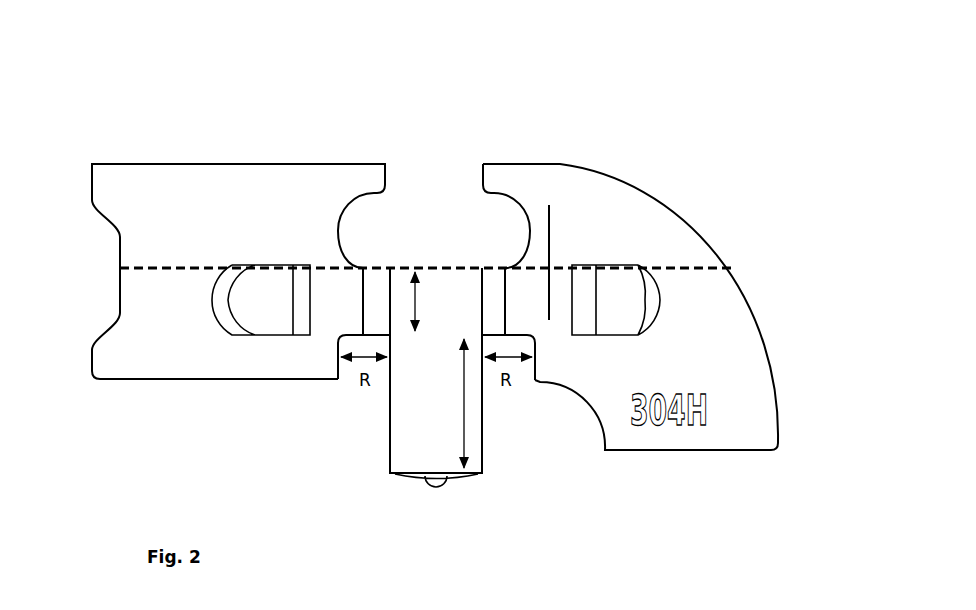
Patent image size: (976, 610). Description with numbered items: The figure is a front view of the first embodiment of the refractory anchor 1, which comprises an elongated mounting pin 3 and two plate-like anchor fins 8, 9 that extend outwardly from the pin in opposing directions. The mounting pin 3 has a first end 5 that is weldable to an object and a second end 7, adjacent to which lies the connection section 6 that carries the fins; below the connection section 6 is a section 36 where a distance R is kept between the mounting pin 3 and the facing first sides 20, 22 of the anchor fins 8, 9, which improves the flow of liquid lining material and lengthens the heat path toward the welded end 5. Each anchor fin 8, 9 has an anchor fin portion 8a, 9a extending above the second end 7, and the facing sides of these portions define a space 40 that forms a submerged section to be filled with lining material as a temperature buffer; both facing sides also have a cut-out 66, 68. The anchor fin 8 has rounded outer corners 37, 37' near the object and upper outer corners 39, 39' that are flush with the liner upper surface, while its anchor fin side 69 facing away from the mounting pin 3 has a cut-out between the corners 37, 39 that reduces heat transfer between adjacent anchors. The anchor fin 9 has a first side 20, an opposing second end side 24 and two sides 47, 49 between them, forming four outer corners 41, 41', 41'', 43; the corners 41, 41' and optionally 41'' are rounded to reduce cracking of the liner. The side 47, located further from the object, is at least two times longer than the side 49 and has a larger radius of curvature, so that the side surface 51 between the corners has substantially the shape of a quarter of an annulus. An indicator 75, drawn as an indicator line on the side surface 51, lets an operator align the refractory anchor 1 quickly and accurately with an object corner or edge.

The refractory anchor 1 is at (258, 126).
The elongated mounting pin 3 is at (415, 415).
The first end of the elongated mounting pin 5 is at (420, 482).
The connection section 6 is at (425, 301).
The second end of the elongated mounting pin 7 is at (435, 268).
The anchor fin 8 is at (192, 290).
The anchor fin portion 8a is at (156, 190).
The anchor fin 9 is at (740, 420).
The anchor fin portion 9a is at (573, 213).
The first side of anchor fin 9 20 is at (507, 298).
The first side of anchor fin 8 22 is at (363, 303).
The second end side 24 is at (703, 452).
The section below the connection section 36 is at (451, 403).
The outer corner 37 is at (59, 403).
The outer corner 37' is at (296, 416).
The outer corner 39 is at (66, 127).
The outer corner 39' is at (400, 119).
The space 40 is at (438, 160).
The outer corner 41 is at (516, 405).
The outer corner 41' is at (589, 480).
The outer corner 41'' is at (820, 452).
The outer corner 43 is at (485, 158).
The side 47 is at (710, 242).
The side 49 is at (583, 405).
The side surface 51 is at (675, 345).
The cut-out 66 is at (340, 225).
The cut-out 68 is at (518, 203).
The anchor fin side 69 is at (120, 273).
The indicator 75 is at (550, 207).